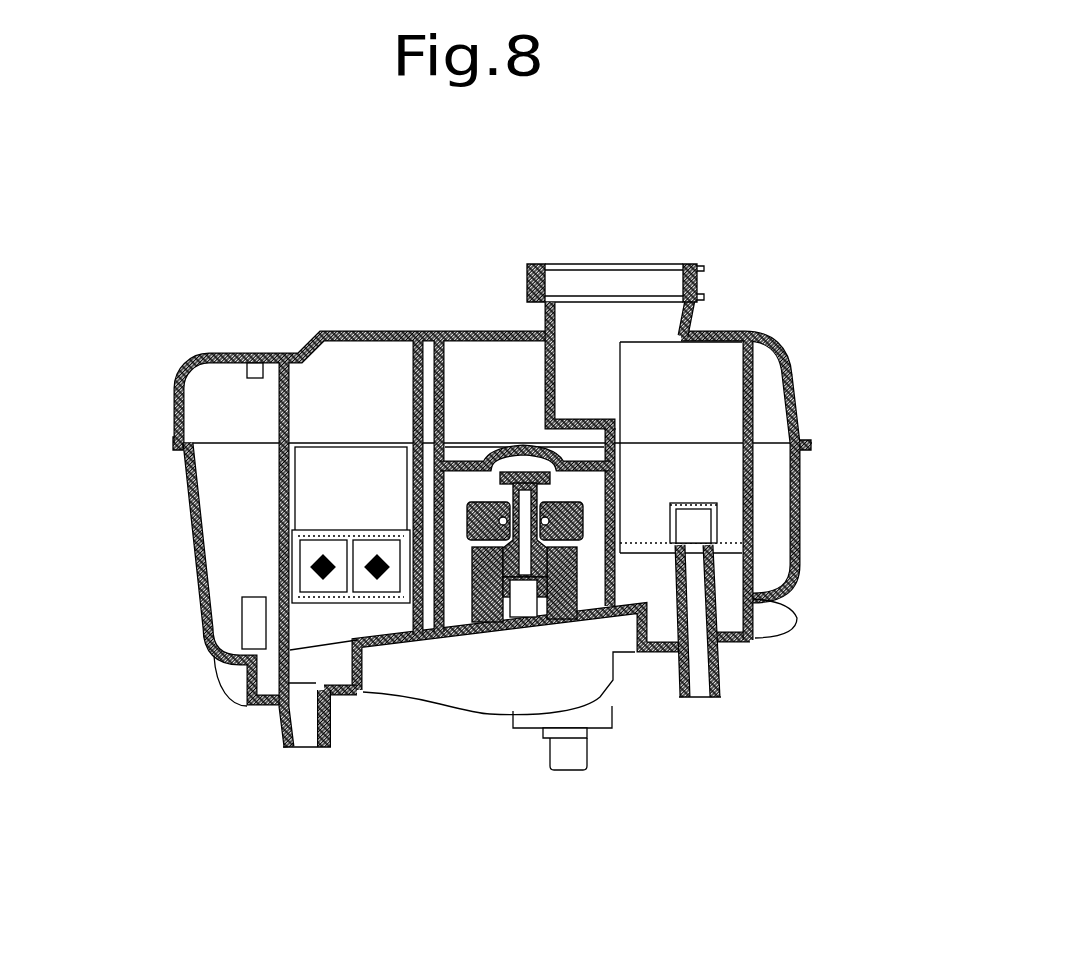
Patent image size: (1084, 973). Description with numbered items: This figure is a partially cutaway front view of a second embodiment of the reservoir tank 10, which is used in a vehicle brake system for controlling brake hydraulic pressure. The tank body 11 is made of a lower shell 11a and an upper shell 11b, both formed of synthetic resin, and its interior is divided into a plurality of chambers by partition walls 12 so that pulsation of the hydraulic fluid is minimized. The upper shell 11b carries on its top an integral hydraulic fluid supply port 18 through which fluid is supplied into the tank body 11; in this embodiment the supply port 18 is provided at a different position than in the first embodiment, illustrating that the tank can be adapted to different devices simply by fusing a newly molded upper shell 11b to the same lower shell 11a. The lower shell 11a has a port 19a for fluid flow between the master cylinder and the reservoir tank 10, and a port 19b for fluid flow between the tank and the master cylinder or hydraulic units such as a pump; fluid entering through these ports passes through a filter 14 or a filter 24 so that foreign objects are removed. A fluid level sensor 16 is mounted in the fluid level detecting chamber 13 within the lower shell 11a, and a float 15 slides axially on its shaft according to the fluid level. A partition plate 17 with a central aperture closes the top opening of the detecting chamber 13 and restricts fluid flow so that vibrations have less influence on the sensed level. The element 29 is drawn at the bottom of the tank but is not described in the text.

The reservoir tank 10 is at (201, 356).
The tank body 11 is at (188, 526).
The lower shell 11a is at (806, 530).
The upper shell 11b is at (785, 347).
The partition wall 12 is at (415, 378).
The fluid level detecting chamber 13 is at (458, 580).
The filter 14 is at (268, 608).
The float 15 is at (577, 547).
The fluid level sensor 16 is at (520, 563).
The partition plate 17 is at (590, 464).
The hydraulic fluid supply port 18 is at (580, 264).
The port 19a is at (723, 693).
The port 19b is at (287, 735).
The filter 24 is at (720, 490).
The bottom protrusion 29 is at (440, 607).